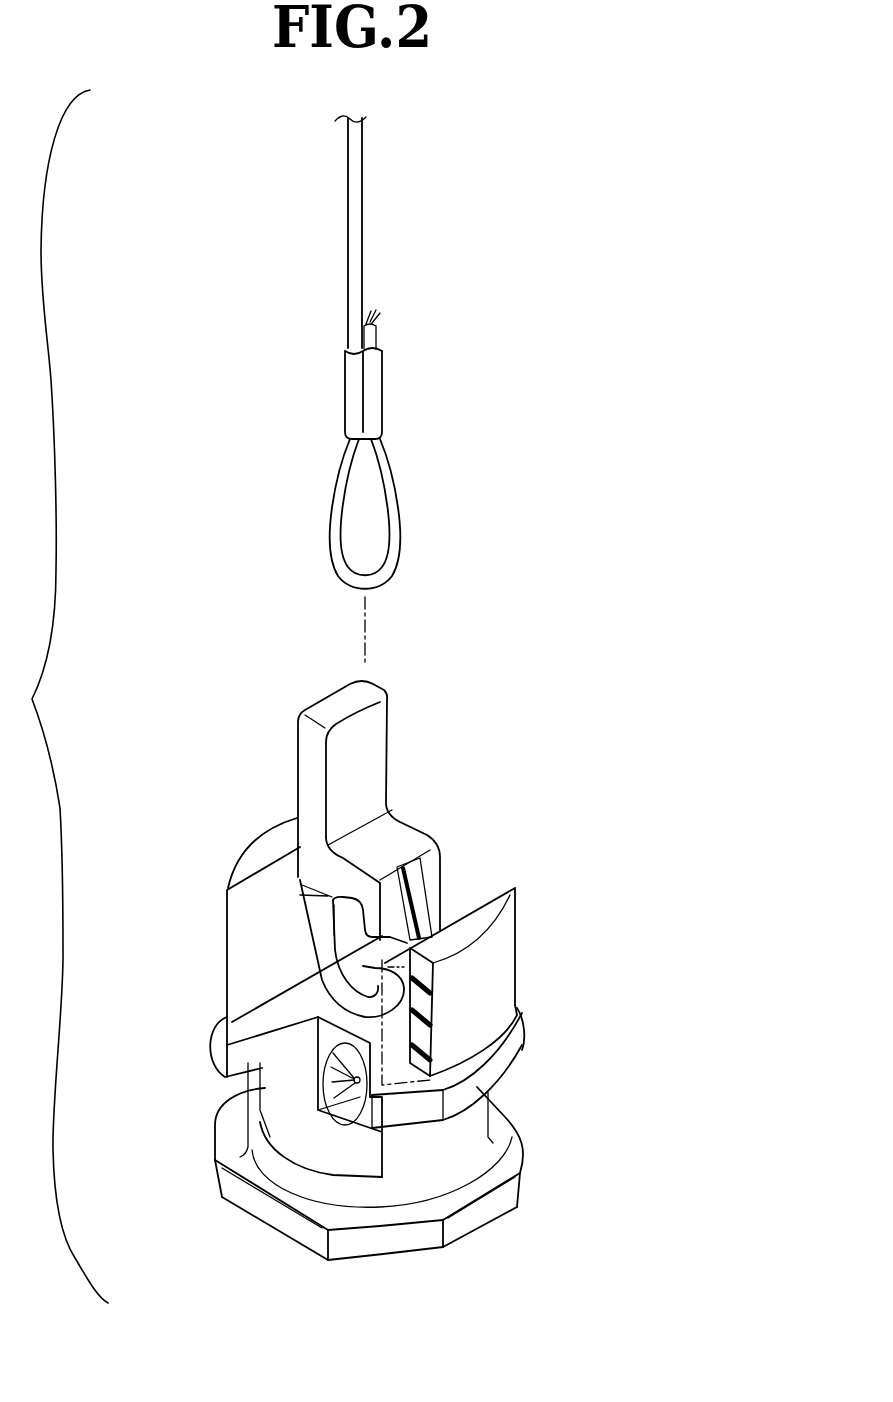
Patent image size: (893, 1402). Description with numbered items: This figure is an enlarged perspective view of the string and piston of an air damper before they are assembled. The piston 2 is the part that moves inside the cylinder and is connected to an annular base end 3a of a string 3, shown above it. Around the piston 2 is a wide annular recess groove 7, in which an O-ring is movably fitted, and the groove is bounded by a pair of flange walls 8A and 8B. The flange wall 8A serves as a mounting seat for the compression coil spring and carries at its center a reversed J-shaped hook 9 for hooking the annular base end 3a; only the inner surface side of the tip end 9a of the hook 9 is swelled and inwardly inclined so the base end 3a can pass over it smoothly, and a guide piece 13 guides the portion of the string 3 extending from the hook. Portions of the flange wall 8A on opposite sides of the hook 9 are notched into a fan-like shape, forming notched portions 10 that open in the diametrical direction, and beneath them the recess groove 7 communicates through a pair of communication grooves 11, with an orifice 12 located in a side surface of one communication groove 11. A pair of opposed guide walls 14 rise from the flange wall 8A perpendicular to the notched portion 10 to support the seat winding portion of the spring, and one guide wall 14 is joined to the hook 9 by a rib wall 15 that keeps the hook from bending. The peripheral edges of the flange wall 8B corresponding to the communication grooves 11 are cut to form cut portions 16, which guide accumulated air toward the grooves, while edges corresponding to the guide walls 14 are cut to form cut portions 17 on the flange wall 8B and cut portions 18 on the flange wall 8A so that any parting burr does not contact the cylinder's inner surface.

The piston 2 is at (203, 925).
The string 3 is at (363, 210).
The annular base end 3a is at (400, 528).
The recess groove 7 is at (393, 1215).
The flange wall 8A is at (218, 1010).
The flange wall 8B is at (380, 1222).
The hook 9 is at (402, 827).
The tip end 9a is at (382, 966).
The notched portion 10 is at (267, 1048).
The communication groove 11 is at (323, 1143).
The orifice 12 is at (318, 1108).
The guide piece 13 is at (378, 735).
The guide wall 14 is at (270, 840).
The rib wall 15 is at (425, 872).
The cut portion 16 is at (307, 1235).
The cut portion 17 is at (467, 1223).
The cut portion 18 is at (473, 1081).